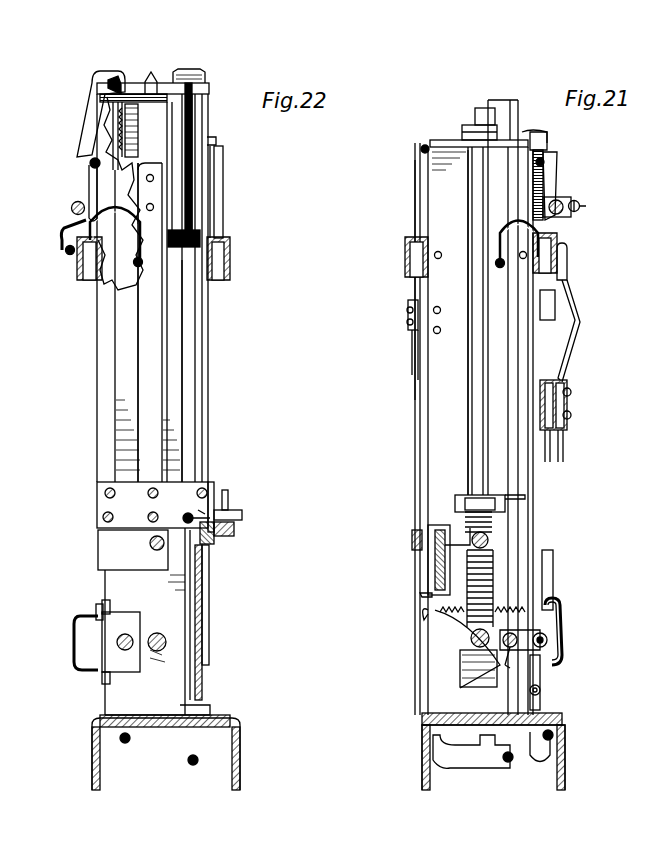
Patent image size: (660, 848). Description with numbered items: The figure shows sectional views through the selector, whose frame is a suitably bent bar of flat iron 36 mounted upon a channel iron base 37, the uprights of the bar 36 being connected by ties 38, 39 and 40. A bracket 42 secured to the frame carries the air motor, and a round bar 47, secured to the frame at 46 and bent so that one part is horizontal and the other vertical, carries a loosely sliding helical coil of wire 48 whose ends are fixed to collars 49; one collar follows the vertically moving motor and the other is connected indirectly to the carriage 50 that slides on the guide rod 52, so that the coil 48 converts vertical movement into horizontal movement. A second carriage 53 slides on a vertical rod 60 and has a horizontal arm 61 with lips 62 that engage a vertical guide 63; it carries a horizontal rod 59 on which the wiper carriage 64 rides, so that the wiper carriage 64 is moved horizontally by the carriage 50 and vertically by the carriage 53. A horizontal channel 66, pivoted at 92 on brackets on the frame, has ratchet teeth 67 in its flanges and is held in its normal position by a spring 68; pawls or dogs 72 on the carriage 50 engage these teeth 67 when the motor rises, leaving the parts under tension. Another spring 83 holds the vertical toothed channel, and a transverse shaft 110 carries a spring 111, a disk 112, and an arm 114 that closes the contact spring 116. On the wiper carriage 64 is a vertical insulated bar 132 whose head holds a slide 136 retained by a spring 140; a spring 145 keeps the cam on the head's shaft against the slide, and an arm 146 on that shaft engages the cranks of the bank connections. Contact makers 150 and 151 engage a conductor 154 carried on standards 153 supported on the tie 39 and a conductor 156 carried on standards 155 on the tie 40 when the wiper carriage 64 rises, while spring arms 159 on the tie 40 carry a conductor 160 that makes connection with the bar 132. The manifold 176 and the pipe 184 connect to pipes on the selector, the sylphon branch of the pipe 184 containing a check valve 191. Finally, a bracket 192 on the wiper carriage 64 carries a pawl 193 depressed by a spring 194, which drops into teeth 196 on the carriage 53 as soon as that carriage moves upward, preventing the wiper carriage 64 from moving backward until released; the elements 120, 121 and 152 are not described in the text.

In FIG. 22, the bar of flat iron 36 is at (200, 84).
In FIG. 21, the bar of flat iron 36 is at (426, 428).
In FIG. 22, the channel iron base 37 is at (240, 735).
In FIG. 21, the channel iron base 37 is at (422, 740).
In FIG. 22, the tie 38 is at (213, 545).
In FIG. 21, the tie 38 is at (412, 538).
In FIG. 22, the tie 39 is at (230, 246).
In FIG. 21, the tie 39 is at (405, 252).
In FIG. 22, the tie 40 is at (77, 263).
In FIG. 21, the tie 40 is at (557, 262).
In FIG. 21, the bracket 42 is at (510, 648).
In FIG. 21, the securing point 46 is at (462, 140).
In FIG. 22, the round bar 47 is at (160, 660).
In FIG. 21, the round bar 47 is at (470, 176).
In FIG. 22, the helical coil of wire 48 is at (160, 633).
In FIG. 21, the helical coil of wire 48 is at (490, 118).
In FIG. 21, the collars 49 is at (455, 500).
In FIG. 22, the carriage 50 is at (136, 616).
In FIG. 22, the guide rod 52 is at (127, 650).
In FIG. 21, the guide rod 52 is at (545, 645).
In FIG. 22, the carriage 53 is at (204, 580).
In FIG. 22, the horizontal rod 59 is at (150, 548).
In FIG. 21, the horizontal rod 59 is at (472, 542).
In FIG. 22, the vertical rod 60 is at (186, 346).
In FIG. 22, the horizontal arm 61 is at (206, 592).
In FIG. 21, the horizontal arm 61 is at (432, 578).
In FIG. 21, the lips 62 is at (422, 595).
In FIG. 21, the vertical guide 63 is at (418, 390).
In FIG. 22, the wiper carriage 64 is at (96, 540).
In FIG. 22, the horizontal channel 66 is at (73, 640).
In FIG. 21, the horizontal channel 66 is at (562, 612).
In FIG. 22, the ratchet teeth 67 is at (97, 608).
In FIG. 21, the spring 68 is at (440, 612).
In FIG. 22, the pawls or dogs 72 is at (108, 608).
In FIG. 22, the spring 83 is at (77, 152).
In FIG. 21, the pivot 92 is at (548, 640).
In FIG. 22, the transverse shaft 110 is at (71, 207).
In FIG. 21, the transverse shaft 110 is at (571, 215).
In FIG. 21, the spring 111 is at (580, 200).
In FIG. 21, the disk 112 is at (545, 154).
In FIG. 21, the arm 114 is at (556, 296).
In FIG. 21, the contact spring 116 is at (575, 330).
In FIG. 21, the cap 120 is at (520, 140).
In FIG. 21, the lug 121 is at (547, 140).
In FIG. 22, the vertical insulated bar 132 is at (146, 316).
In FIG. 22, the slide 136 is at (138, 128).
In FIG. 22, the spring 140 is at (140, 146).
In FIG. 22, the spring 145 is at (104, 88).
In FIG. 22, the arm 146 is at (152, 72).
In FIG. 22, the contact maker 150 is at (97, 122).
In FIG. 22, the contact maker 151 is at (198, 126).
In FIG. 22, the plate 152 is at (223, 182).
In FIG. 22, the standards 153 is at (223, 230).
In FIG. 21, the standards 153 is at (415, 172).
In FIG. 22, the conductor 154 is at (216, 142).
In FIG. 21, the conductor 154 is at (421, 150).
In FIG. 22, the standards 155 is at (89, 184).
In FIG. 21, the standards 155 is at (556, 182).
In FIG. 22, the conductor 156 is at (90, 163).
In FIG. 21, the conductor 156 is at (545, 164).
In FIG. 22, the spring arms 159 is at (130, 212).
In FIG. 21, the spring arms 159 is at (505, 230).
In FIG. 22, the conductor 160 is at (123, 246).
In FIG. 21, the conductor 160 is at (496, 265).
In FIG. 22, the manifold 176 is at (188, 762).
In FIG. 21, the manifold 176 is at (460, 670).
In FIG. 22, the pipe 184 is at (62, 236).
In FIG. 21, the pipe 184 is at (567, 282).
In FIG. 21, the check valve 191 is at (540, 675).
In FIG. 22, the bracket 192 is at (214, 490).
In FIG. 22, the pawl 193 is at (230, 500).
In FIG. 22, the spring 194 is at (196, 510).
In FIG. 22, the teeth 196 is at (236, 528).